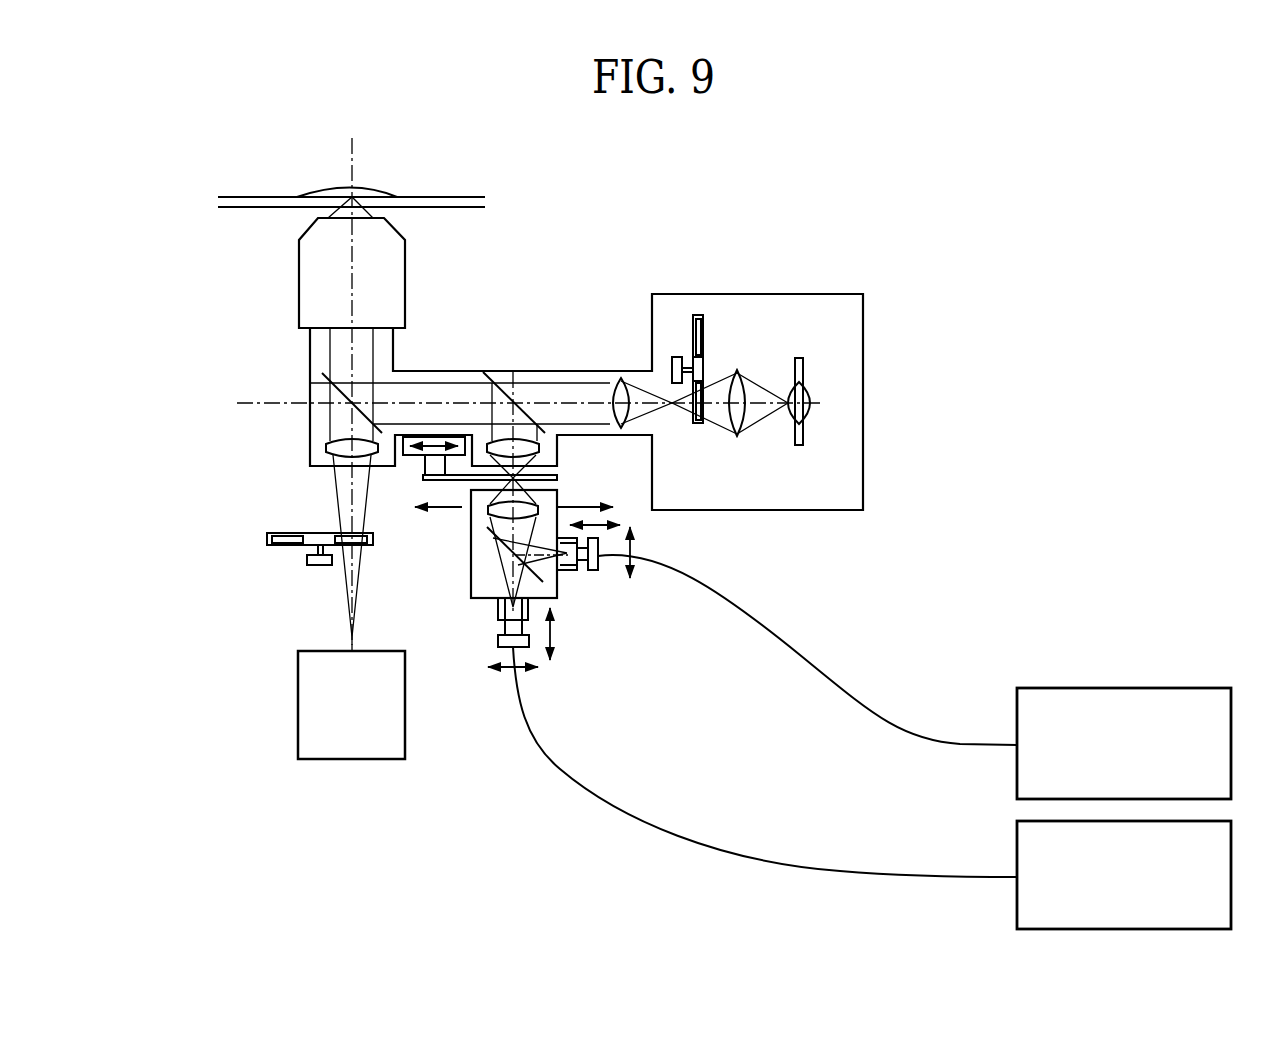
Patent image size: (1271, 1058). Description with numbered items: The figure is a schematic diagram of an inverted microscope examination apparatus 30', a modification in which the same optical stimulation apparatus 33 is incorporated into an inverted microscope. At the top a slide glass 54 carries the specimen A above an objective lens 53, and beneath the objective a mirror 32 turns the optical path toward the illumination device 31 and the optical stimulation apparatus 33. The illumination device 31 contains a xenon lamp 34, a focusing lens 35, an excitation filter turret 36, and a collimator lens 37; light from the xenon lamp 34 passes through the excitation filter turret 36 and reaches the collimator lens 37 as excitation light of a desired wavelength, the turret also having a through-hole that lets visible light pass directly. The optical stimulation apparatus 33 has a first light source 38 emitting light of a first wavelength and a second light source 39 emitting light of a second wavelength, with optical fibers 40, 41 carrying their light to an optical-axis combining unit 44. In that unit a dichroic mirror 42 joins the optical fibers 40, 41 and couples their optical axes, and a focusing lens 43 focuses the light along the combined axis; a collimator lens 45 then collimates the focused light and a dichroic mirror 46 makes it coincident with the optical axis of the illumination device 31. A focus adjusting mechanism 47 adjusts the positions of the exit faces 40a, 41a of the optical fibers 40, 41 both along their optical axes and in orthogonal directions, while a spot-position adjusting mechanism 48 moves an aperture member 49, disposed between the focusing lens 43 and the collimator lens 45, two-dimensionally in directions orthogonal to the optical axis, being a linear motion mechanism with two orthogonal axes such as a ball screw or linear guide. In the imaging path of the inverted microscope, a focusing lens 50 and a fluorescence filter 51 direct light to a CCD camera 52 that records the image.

The inverted microscope examination apparatus 30' is at (861, 157).
The illumination device 31 is at (863, 317).
The dichroic mirror 32 is at (322, 373).
The optical stimulation apparatus 33 is at (631, 875).
The xenon lamp 34 is at (803, 367).
The focusing lens 35 is at (738, 377).
The excitation filter turret 36 is at (693, 317).
The collimator lens 37 is at (608, 385).
The first light source 38 is at (1113, 688).
The second light source 39 is at (1017, 903).
The optical fiber 40 is at (850, 685).
The exit face 40a is at (562, 571).
The optical fiber 41 is at (779, 861).
The exit face 41a is at (497, 610).
The dichroic mirror 42 is at (487, 527).
The focusing lens 43 is at (490, 508).
The optical-axis combining unit 44 is at (472, 598).
The collimator lens 45 is at (537, 447).
The dichroic mirror 46 is at (510, 387).
The focus adjusting mechanism 47 is at (593, 562).
The spot-position adjusting mechanism 48 is at (422, 473).
The aperture member 49 is at (440, 479).
The focusing lens 50 is at (325, 447).
The fluorescence filter 51 is at (265, 538).
The CCD camera 52 is at (298, 677).
The objective lens 53 is at (311, 258).
The slide glass 54 is at (262, 196).
The specimen A is at (372, 188).